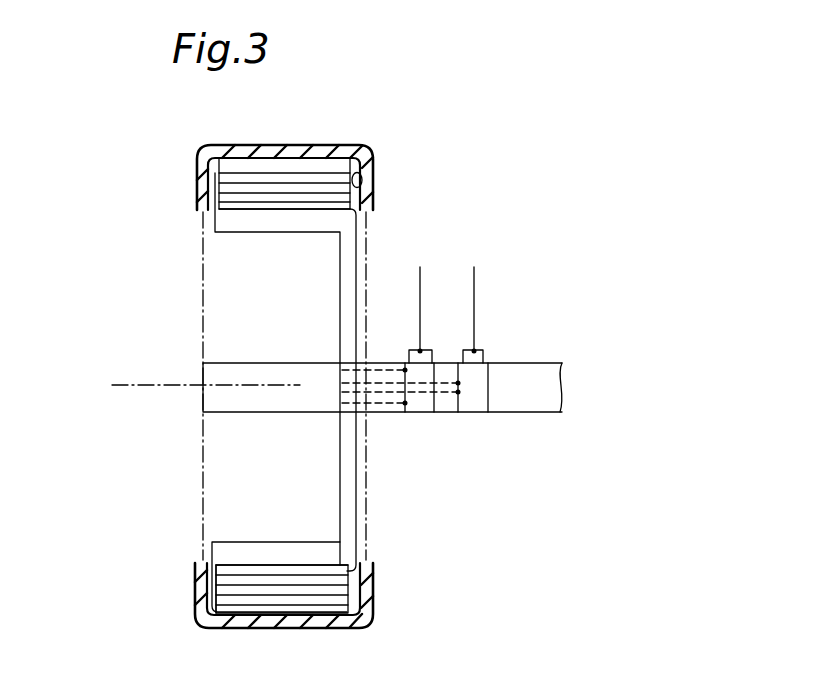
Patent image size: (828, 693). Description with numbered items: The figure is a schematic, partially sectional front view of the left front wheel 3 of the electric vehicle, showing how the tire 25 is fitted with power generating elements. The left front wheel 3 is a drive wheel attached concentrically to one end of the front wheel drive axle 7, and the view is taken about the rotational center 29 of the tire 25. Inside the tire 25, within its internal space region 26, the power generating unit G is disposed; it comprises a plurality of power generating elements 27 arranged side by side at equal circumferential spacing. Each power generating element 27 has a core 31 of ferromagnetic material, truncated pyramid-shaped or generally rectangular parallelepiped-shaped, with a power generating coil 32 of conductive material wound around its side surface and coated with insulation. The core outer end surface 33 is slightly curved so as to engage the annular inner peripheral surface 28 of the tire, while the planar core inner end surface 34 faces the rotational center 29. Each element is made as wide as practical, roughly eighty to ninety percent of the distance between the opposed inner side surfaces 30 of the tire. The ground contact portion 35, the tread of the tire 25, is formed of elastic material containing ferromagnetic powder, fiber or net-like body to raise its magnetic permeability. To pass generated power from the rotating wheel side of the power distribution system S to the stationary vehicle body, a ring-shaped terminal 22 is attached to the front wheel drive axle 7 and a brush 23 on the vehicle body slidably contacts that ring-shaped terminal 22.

The left front wheel 3 is at (562, 186).
The front wheel drive axle 7 is at (548, 360).
The ring-shaped terminal 22 is at (478, 405).
The brush 23 is at (485, 355).
The tire 25 is at (158, 178).
The internal space region 26 is at (253, 218).
The power generating element 27 is at (250, 566).
The inner peripheral surface 28 is at (286, 164).
The rotational center 29 is at (135, 386).
The inner side surface 30 is at (373, 163).
The core 31 is at (332, 562).
The power generating coil 32 is at (298, 573).
The core outer end surface 33 is at (236, 626).
The core inner end surface 34 is at (272, 563).
The ground contact portion 35 is at (250, 146).
The power generating unit G is at (238, 248).
The power distribution system S is at (330, 272).